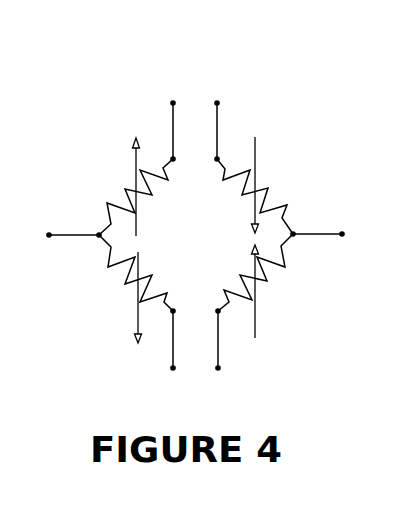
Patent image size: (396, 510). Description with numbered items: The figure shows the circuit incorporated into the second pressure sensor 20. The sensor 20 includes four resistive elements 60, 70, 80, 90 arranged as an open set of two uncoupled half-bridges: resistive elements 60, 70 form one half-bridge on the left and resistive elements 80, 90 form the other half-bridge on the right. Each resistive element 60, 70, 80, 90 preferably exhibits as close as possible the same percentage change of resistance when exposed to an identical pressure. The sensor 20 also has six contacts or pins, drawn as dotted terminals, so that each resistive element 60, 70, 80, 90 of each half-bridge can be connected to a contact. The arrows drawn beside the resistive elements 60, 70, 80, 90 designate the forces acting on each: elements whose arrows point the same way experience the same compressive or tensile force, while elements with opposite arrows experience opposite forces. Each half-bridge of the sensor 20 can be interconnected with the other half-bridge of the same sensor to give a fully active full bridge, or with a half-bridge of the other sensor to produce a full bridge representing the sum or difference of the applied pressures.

The second pressure sensor 20 is at (300, 88).
The resistive element 60 is at (120, 197).
The resistive element 70 is at (115, 280).
The resistive element 80 is at (277, 280).
The resistive element 90 is at (272, 200).